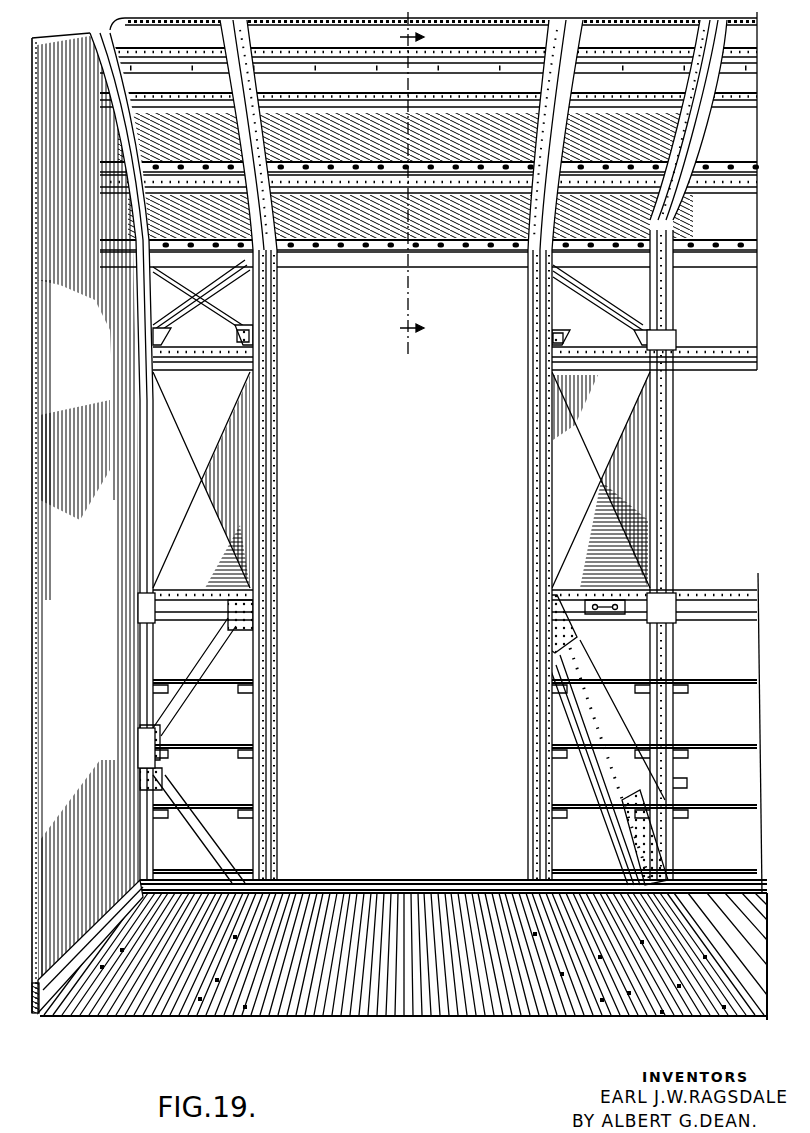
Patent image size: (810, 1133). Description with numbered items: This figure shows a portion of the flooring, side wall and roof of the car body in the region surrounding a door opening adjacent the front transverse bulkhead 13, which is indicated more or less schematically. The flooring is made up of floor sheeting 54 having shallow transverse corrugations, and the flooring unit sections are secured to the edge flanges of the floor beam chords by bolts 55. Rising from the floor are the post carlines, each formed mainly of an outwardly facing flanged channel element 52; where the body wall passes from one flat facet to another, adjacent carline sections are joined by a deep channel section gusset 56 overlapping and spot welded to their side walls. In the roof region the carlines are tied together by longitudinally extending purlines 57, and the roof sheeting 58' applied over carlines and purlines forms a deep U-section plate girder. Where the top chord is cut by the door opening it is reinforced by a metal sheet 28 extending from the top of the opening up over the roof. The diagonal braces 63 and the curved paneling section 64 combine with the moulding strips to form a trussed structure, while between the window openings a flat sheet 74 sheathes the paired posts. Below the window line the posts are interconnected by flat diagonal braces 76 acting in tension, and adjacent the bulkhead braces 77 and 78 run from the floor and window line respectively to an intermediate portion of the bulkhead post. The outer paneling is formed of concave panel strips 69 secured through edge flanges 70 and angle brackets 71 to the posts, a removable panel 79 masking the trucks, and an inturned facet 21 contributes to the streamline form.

The front transverse bulkhead 13 is at (66, 750).
The inturned facet 21 is at (422, 189).
The metal sheet 28 is at (444, 228).
The flanged channel element 52 is at (657, 548).
The floor sheeting 54 is at (243, 1007).
The bolts 55 is at (199, 1002).
The deep channel section gusset 56 is at (684, 134).
The purlines 57 is at (370, 57).
The roof sheeting 58' is at (433, 191).
The diagonal braces 63 is at (232, 293).
The curved paneling section 64 is at (758, 313).
The concave panel strips 69 is at (226, 676).
The edge flanges 70 is at (722, 753).
The angle brackets 71 is at (688, 772).
The flat sheet 74 is at (196, 423).
The diagonal braces 76 is at (590, 668).
The brace 77 is at (180, 792).
The brace 78 is at (220, 650).
The removable panel 79 is at (302, 900).